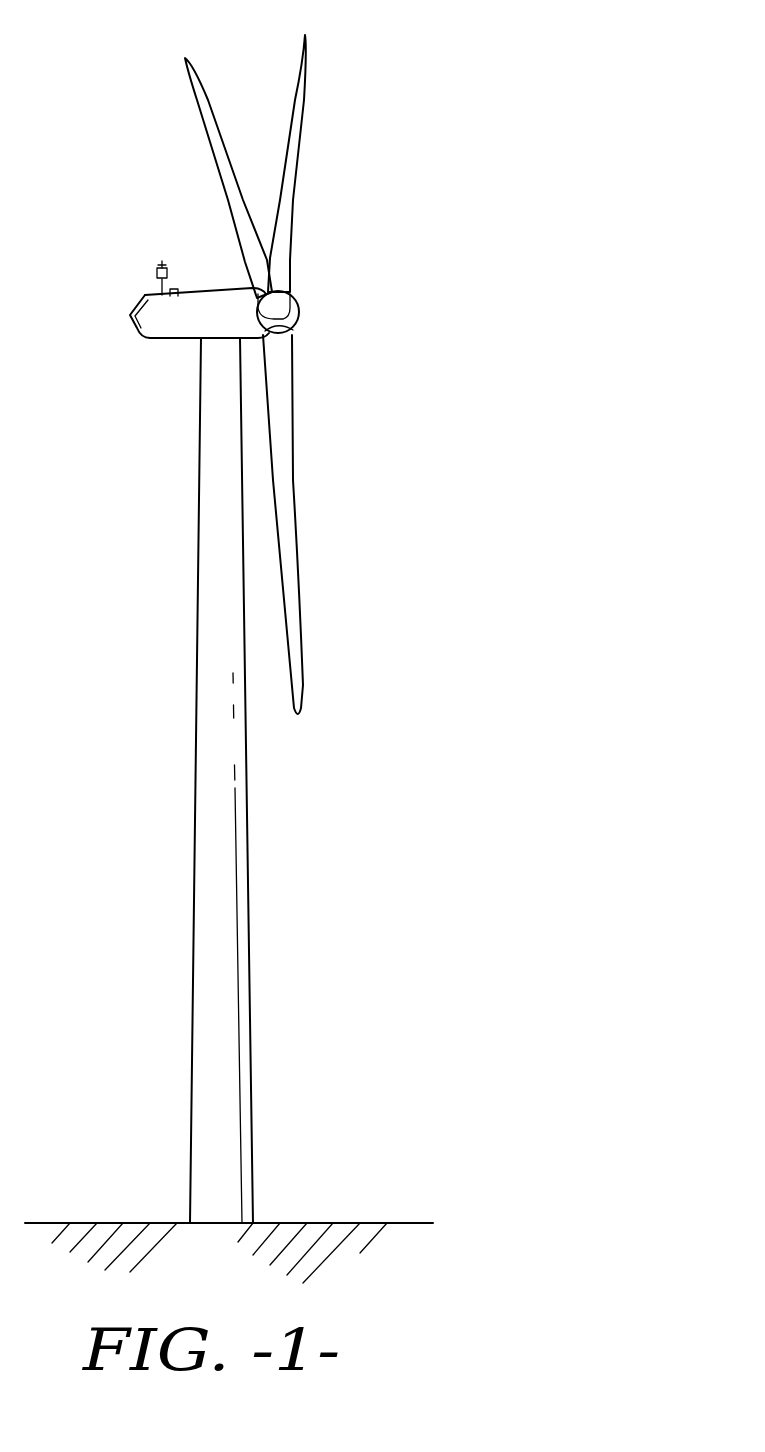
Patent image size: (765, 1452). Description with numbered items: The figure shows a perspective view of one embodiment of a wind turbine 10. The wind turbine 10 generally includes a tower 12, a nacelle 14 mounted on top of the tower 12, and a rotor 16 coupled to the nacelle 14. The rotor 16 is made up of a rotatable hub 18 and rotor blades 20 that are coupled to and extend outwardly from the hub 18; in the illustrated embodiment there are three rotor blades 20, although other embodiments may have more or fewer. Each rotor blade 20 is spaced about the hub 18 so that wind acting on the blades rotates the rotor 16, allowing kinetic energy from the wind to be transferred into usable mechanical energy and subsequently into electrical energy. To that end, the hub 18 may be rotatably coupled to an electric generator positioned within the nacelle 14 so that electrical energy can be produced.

The wind turbine 10 is at (261, 647).
The tower 12 is at (207, 902).
The nacelle 14 is at (175, 341).
The rotor 16 is at (309, 284).
The rotatable hub 18 is at (301, 320).
The rotor blade 20 is at (295, 82).